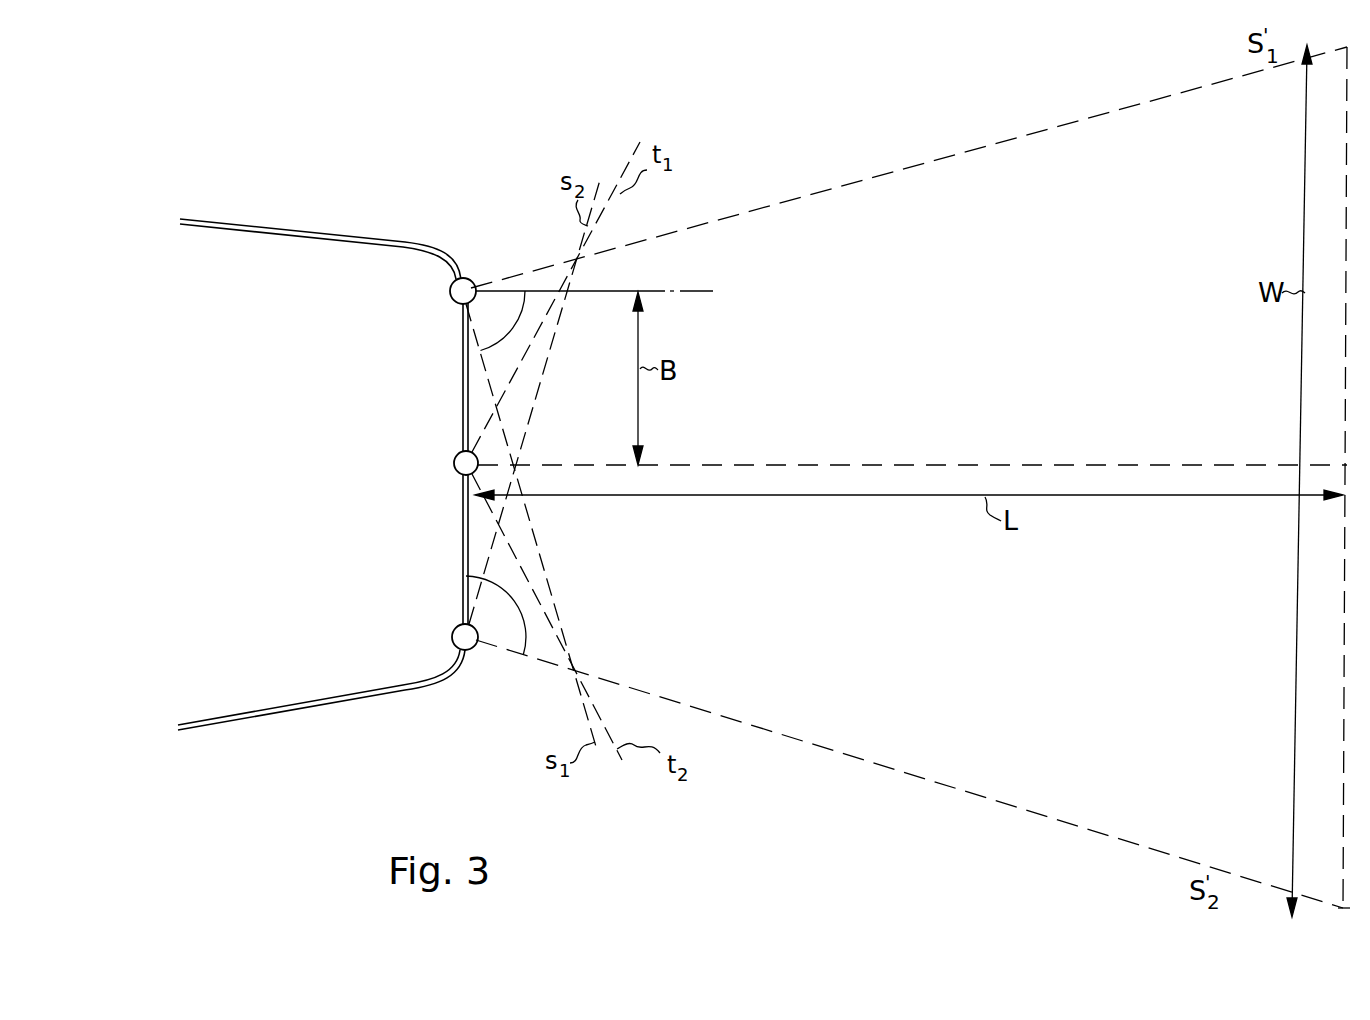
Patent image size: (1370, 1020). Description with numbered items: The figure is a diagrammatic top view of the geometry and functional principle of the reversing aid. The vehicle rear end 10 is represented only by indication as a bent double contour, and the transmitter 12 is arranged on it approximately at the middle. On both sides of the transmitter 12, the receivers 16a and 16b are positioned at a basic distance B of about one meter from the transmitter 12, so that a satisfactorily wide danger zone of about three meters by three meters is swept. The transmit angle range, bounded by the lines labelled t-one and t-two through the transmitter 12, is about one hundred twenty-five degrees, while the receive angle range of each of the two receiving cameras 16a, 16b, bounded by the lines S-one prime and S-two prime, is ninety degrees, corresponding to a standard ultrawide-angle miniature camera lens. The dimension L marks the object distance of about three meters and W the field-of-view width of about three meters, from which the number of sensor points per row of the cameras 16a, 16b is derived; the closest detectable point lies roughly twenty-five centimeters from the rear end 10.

The vehicle rear end 10 is at (362, 259).
The transmitter 12 is at (458, 457).
The receiver 16a is at (465, 279).
The receiver 16b is at (470, 650).